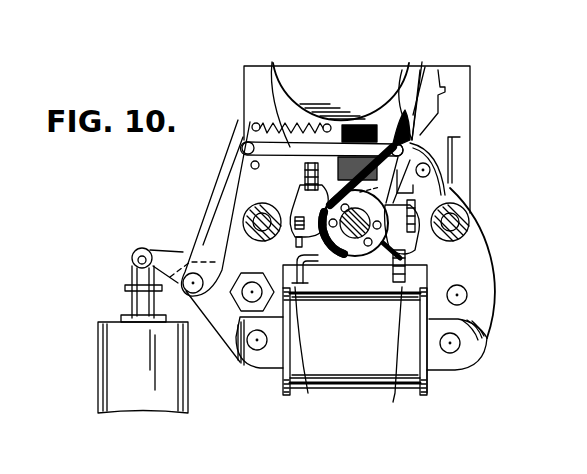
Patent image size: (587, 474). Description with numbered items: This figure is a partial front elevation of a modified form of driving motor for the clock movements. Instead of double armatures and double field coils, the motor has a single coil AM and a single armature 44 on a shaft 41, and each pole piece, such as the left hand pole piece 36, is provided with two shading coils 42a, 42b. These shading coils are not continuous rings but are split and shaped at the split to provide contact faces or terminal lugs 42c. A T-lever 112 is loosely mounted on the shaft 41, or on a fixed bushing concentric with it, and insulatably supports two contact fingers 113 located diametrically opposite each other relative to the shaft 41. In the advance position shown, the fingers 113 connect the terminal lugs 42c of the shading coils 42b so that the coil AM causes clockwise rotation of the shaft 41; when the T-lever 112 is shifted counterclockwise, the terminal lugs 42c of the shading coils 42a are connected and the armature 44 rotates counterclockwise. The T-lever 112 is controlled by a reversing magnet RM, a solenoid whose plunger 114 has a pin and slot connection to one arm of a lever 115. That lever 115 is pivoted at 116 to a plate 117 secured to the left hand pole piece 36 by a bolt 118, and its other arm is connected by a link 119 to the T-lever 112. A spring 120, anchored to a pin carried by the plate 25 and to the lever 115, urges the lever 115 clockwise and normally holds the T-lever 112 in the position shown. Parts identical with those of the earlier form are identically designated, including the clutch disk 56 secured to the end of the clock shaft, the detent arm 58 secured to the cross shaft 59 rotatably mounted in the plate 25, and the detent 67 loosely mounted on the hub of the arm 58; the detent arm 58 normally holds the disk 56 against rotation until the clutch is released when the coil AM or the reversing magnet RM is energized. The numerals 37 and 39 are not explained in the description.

The plate 25 is at (255, 92).
The pole piece 36 is at (478, 282).
The valve flange 37 is at (455, 205).
The mounting stud 39 is at (245, 220).
The shaft 41 is at (352, 255).
The shading coil 42a is at (374, 236).
The shading coil 42b is at (296, 167).
The terminal lug 42c is at (297, 246).
The armature 44 is at (343, 243).
The disk 56 is at (383, 78).
The detent arm 58 is at (435, 102).
The cross shaft 59 is at (430, 168).
The detent 67 is at (457, 115).
The T-lever 112 is at (368, 160).
The contact finger 113 is at (253, 185).
The plunger 114 is at (140, 303).
The lever 115 is at (205, 245).
The pivot 116 is at (193, 290).
The plate 117 is at (215, 313).
The bolt 118 is at (249, 298).
The link 119 is at (272, 96).
The spring 120 is at (308, 127).
The coil AM is at (378, 373).
The reversing magnet RM is at (115, 358).